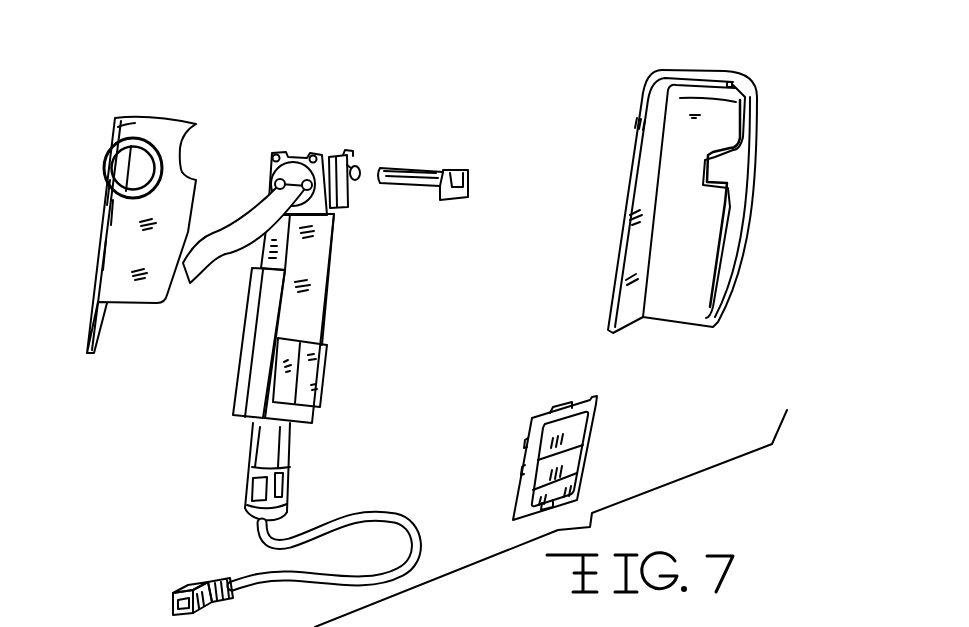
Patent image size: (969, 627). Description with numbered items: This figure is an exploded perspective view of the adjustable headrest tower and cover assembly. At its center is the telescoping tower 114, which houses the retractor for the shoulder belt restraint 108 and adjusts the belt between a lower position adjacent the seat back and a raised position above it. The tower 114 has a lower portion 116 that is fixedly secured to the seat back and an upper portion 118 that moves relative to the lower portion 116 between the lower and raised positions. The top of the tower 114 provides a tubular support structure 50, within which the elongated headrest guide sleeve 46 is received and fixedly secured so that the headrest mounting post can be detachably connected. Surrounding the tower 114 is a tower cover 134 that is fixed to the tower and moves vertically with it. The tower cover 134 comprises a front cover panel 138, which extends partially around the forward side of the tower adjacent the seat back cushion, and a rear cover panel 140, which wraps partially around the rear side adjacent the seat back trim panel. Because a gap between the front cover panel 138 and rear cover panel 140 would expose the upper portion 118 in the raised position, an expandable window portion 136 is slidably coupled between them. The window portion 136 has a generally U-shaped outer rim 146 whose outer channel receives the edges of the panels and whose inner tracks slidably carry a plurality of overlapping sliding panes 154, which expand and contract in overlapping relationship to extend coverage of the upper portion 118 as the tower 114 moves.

The headrest guide sleeve 46 is at (420, 168).
The tubular support structure 50 is at (346, 152).
The shoulder belt restraint 108 is at (222, 250).
The telescoping tower 114 is at (297, 344).
The lower portion 116 is at (280, 440).
The upper portion 118 is at (322, 242).
The tower cover 134 is at (638, 92).
The expandable window portion 136 is at (566, 432).
The front cover panel 138 is at (147, 130).
The rear cover panel 140 is at (740, 165).
The outer rim 146 is at (553, 417).
The sliding panes 154 is at (538, 472).